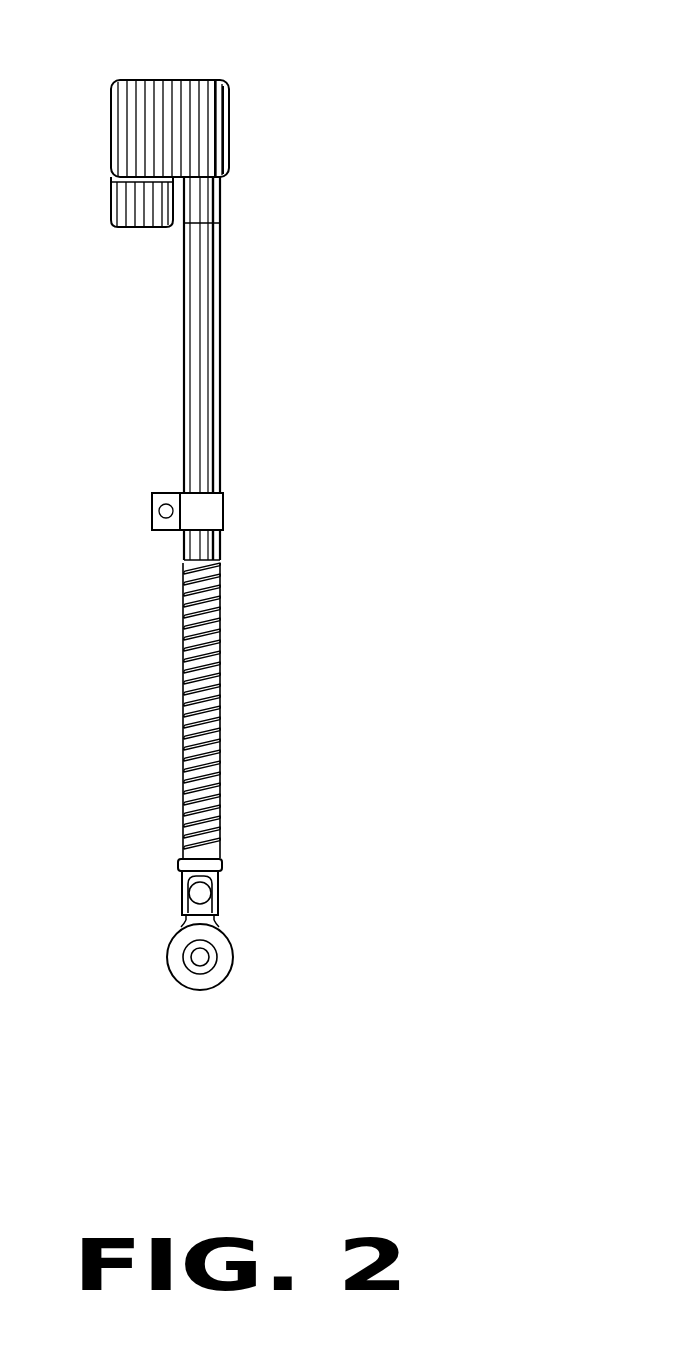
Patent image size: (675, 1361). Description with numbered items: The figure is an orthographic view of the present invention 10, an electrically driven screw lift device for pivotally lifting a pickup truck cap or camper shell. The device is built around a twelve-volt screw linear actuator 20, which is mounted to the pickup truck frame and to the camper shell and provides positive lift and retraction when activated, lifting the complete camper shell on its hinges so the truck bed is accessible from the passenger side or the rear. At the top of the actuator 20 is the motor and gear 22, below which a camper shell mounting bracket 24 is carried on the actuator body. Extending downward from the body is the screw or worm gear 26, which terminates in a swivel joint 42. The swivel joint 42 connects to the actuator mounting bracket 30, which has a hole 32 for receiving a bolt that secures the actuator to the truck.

The present invention 10 is at (345, 265).
The actuator 20 is at (220, 357).
The motor and gear 22 is at (173, 80).
The camper shell mounting bracket 24 is at (203, 513).
The screw or worm gear 26 is at (220, 722).
The actuator mounting bracket 30 is at (183, 949).
The hole 32 is at (212, 957).
The swivel joint 42 is at (207, 947).